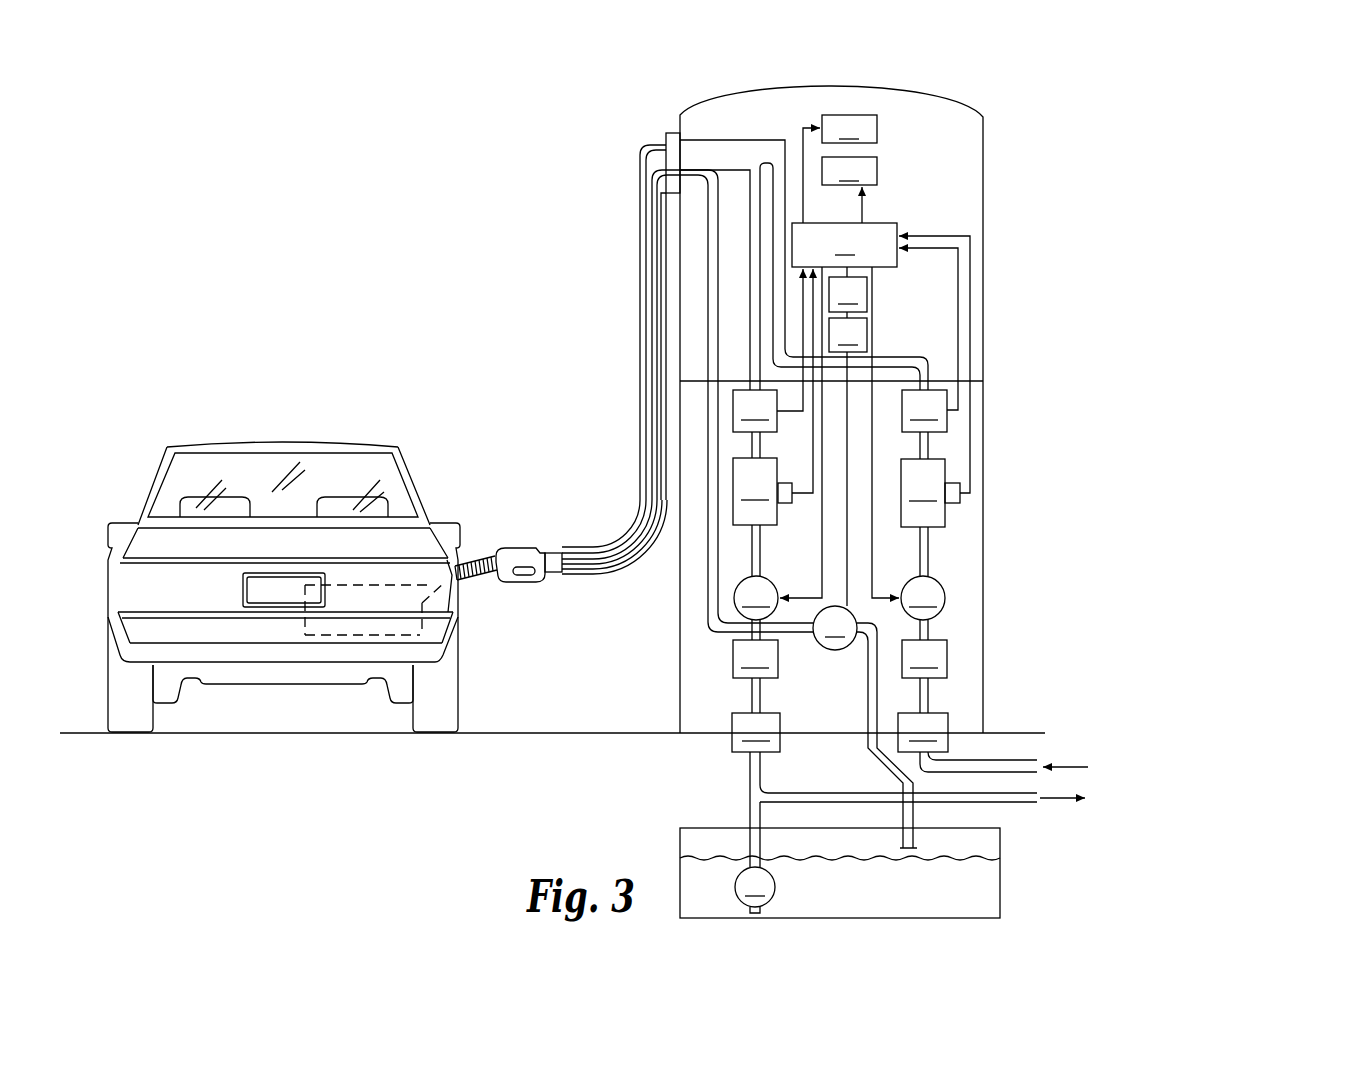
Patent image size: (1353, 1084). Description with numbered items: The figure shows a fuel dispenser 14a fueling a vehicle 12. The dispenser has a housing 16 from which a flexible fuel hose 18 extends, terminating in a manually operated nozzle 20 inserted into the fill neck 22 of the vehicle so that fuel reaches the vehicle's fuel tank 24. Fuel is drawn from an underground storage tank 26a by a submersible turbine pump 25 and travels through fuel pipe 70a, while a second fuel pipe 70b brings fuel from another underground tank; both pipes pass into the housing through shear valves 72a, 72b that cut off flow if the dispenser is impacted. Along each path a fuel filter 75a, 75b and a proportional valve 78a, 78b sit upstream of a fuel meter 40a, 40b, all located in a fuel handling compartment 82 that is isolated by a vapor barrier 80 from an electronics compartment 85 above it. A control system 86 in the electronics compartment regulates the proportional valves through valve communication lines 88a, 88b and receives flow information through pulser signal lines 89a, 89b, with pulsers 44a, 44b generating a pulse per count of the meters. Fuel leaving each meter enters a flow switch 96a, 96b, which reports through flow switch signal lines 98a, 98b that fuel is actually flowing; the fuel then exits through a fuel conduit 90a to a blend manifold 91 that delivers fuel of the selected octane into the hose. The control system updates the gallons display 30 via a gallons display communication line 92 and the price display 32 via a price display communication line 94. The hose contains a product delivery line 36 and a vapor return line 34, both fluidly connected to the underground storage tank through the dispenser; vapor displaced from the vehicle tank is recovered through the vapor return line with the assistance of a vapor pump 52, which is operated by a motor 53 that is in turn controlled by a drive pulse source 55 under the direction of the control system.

The vehicle 12 is at (313, 440).
The fuel dispenser 14a is at (1066, 116).
The housing 16 is at (986, 147).
The flexible fuel hose 18 is at (624, 234).
The nozzle 20 is at (515, 545).
The fill neck 22 is at (460, 600).
The fuel tank 24 is at (388, 633).
The submersible turbine pump 25 is at (755, 890).
The underground storage tank 26a is at (966, 828).
The gallons display 30 is at (849, 171).
The price display 32 is at (849, 129).
The vapor return line 34 is at (639, 550).
The product delivery line 36 is at (641, 405).
The fuel meter 40a is at (755, 491).
The fuel meter 40b is at (923, 493).
The pulser 44a is at (789, 505).
The pulser 44b is at (963, 496).
The vapor pump 52 is at (865, 600).
The motor 53 is at (848, 332).
The drive pulse source 55 is at (848, 289).
The fuel pipe 70a is at (750, 767).
The fuel pipe 70b is at (1022, 758).
The shear valve 72a is at (756, 732).
The shear valve 72b is at (923, 732).
The fuel filter 75a is at (755, 659).
The fuel filter 75b is at (924, 659).
The proportional valve 78a is at (756, 598).
The proportional valve 78b is at (923, 598).
The vapor barrier 80 is at (975, 383).
The fuel handling compartment 82 is at (955, 624).
The electronics compartment 85 is at (940, 203).
The control system 86 is at (844, 245).
The valve communication line 88a is at (823, 528).
The valve communication line 88b is at (876, 571).
The pulser signal line 89a is at (817, 428).
The pulser signal line 89b is at (972, 469).
The fuel conduit 90a is at (752, 330).
The blend manifold 91 is at (709, 142).
The gallons display communication line 92 is at (870, 199).
The price display communication line 94 is at (812, 126).
The flow switch 96a is at (755, 411).
The flow switch 96b is at (924, 411).
The flow switch signal line 98a is at (800, 413).
The flow switch signal line 98b is at (962, 283).